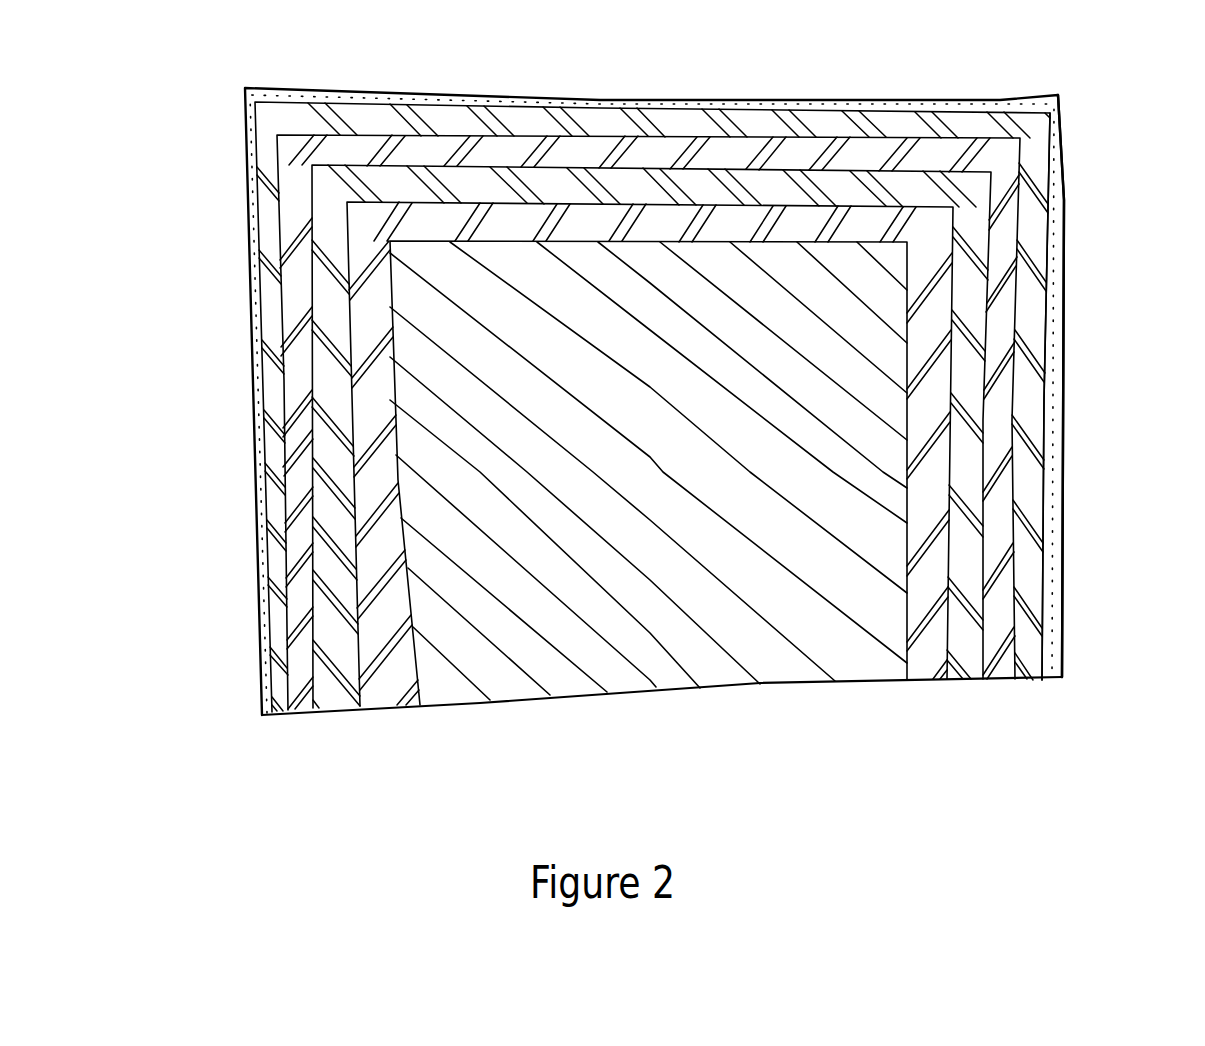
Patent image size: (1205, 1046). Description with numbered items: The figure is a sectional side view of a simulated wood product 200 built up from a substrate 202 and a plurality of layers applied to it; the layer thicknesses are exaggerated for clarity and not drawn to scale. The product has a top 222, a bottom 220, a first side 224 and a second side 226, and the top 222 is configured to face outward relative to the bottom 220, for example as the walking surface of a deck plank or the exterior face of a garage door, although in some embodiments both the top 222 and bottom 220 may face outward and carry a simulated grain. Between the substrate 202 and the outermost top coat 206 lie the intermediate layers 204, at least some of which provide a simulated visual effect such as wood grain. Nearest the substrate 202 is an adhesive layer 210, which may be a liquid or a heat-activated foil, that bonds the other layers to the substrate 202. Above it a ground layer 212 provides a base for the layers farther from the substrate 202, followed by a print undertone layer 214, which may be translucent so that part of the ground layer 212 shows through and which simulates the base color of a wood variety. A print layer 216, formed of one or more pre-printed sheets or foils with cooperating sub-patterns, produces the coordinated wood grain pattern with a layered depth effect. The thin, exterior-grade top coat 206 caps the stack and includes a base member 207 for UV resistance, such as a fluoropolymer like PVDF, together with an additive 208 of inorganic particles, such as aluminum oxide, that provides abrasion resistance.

The simulated wood product 200 is at (1091, 91).
The substrate 202 is at (793, 672).
The intermediate layers 204 is at (1037, 683).
The top coat 206 is at (265, 715).
The base member 207 is at (1053, 556).
The additive 208 is at (1053, 590).
The adhesive layer 210 is at (393, 708).
The ground layer 212 is at (340, 720).
The print undertone layer 214 is at (307, 718).
The print layer 216 is at (287, 717).
The bottom 220 is at (640, 799).
The top 222 is at (640, 78).
The first side 224 is at (1088, 375).
The second side 226 is at (205, 394).